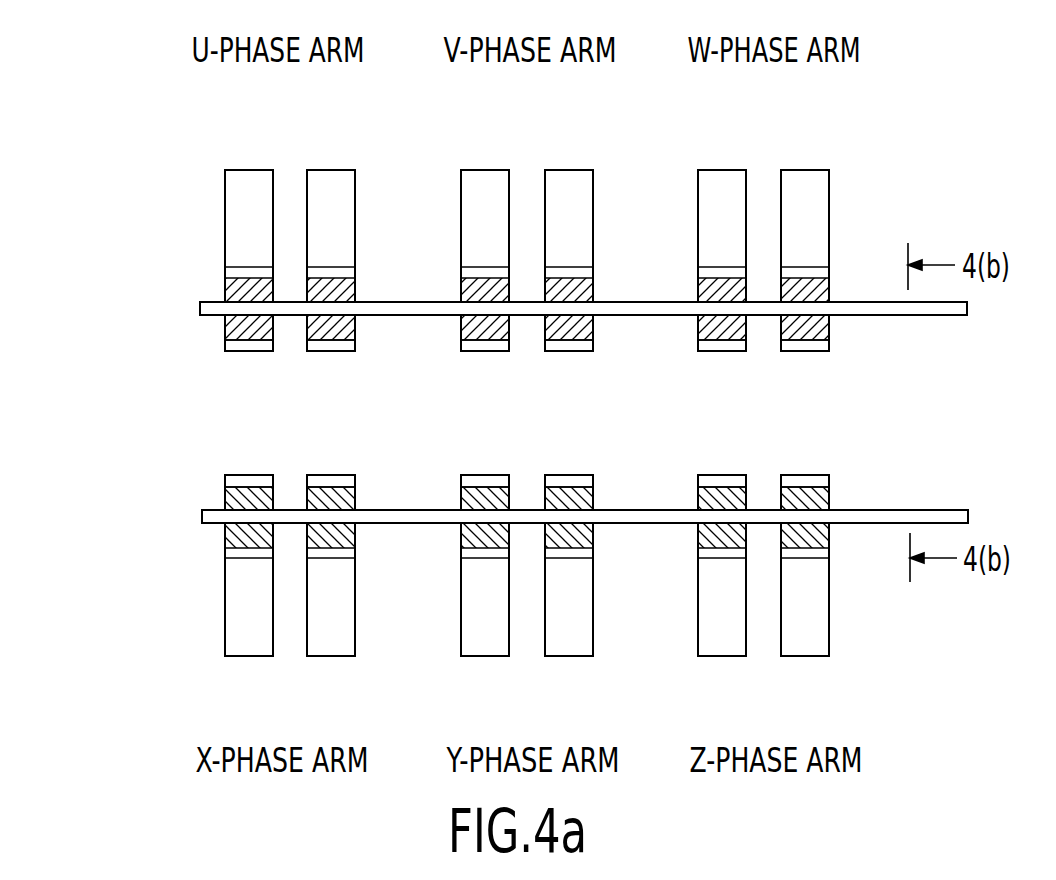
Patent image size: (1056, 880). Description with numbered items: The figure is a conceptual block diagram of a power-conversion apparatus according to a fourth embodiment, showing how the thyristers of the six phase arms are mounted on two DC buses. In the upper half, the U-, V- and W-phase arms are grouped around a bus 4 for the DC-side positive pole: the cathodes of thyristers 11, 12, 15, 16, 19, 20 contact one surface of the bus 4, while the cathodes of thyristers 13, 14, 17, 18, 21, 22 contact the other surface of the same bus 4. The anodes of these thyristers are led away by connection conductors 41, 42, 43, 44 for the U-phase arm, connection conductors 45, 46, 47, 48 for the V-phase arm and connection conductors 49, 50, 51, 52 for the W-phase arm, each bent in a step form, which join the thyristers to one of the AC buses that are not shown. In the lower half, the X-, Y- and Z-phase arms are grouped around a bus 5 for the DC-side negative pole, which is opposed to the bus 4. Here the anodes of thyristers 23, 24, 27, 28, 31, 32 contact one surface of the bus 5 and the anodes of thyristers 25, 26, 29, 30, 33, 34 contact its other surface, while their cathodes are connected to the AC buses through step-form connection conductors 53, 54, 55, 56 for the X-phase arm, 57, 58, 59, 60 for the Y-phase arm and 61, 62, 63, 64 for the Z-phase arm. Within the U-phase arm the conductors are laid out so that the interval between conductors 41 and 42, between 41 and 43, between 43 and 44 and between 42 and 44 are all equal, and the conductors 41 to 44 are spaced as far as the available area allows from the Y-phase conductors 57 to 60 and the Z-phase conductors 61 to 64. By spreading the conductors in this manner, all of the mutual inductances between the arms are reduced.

The bus for DC-side positive pole 4 is at (950, 315).
The bus for DC-side negative pole 5 is at (945, 510).
The thyrister 11 is at (225, 290).
The thyrister 12 is at (355, 290).
The thyrister 13 is at (225, 338).
The thyrister 14 is at (355, 332).
The thyrister 15 is at (461, 290).
The thyrister 16 is at (593, 290).
The thyrister 17 is at (461, 338).
The thyrister 18 is at (593, 332).
The thyrister 19 is at (698, 290).
The thyrister 20 is at (829, 290).
The thyrister 21 is at (698, 338).
The thyrister 22 is at (829, 332).
The thyrister 23 is at (225, 492).
The thyrister 24 is at (355, 490).
The thyrister 25 is at (225, 535).
The thyrister 26 is at (355, 538).
The thyrister 27 is at (461, 492).
The thyrister 28 is at (593, 490).
The thyrister 29 is at (461, 538).
The thyrister 30 is at (593, 538).
The thyrister 31 is at (698, 492).
The thyrister 32 is at (829, 490).
The thyrister 33 is at (698, 535).
The thyrister 34 is at (829, 538).
The connection conductor 41 is at (250, 170).
The connection conductor 42 is at (332, 170).
The connection conductor 43 is at (249, 351).
The connection conductor 44 is at (331, 351).
The connection conductor 45 is at (486, 170).
The connection conductor 46 is at (570, 170).
The connection conductor 47 is at (485, 351).
The connection conductor 48 is at (569, 351).
The connection conductor 49 is at (721, 170).
The connection conductor 50 is at (805, 170).
The connection conductor 51 is at (720, 351).
The connection conductor 52 is at (804, 351).
The connection conductor 53 is at (249, 475).
The connection conductor 54 is at (331, 475).
The connection conductor 55 is at (249, 656).
The connection conductor 56 is at (331, 656).
The connection conductor 57 is at (485, 475).
The connection conductor 58 is at (569, 475).
The connection conductor 59 is at (485, 656).
The connection conductor 60 is at (569, 656).
The connection conductor 61 is at (720, 475).
The connection conductor 62 is at (804, 475).
The connection conductor 63 is at (722, 656).
The connection conductor 64 is at (806, 656).